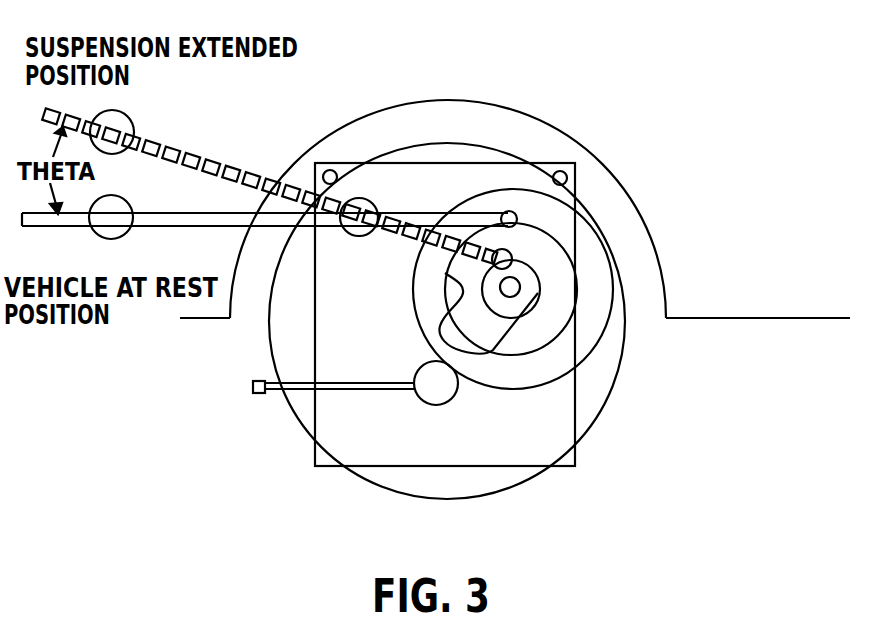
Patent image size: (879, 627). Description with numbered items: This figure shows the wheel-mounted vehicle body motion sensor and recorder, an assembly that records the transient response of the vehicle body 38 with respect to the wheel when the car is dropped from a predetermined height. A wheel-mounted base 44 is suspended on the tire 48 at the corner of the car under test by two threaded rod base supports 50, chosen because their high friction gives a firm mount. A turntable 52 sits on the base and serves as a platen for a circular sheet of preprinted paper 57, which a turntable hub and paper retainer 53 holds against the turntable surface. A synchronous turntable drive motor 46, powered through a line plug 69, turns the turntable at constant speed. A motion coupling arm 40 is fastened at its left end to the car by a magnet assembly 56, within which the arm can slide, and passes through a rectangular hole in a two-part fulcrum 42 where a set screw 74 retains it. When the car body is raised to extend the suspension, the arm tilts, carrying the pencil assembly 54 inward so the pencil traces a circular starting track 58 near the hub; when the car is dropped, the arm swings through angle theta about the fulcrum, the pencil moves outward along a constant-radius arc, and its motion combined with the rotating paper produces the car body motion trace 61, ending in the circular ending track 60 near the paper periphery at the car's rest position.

The vehicle body 38 is at (612, 50).
The motion coupling arm 40 is at (198, 160).
The fulcrum 42 is at (357, 190).
The wheel-mounted base 44 is at (362, 421).
The turntable drive motor 46 is at (439, 407).
The tire 48 is at (398, 494).
The threaded rod base supports 50 is at (323, 170).
The turntable 52 is at (563, 369).
The turntable hub and paper retainer 53 is at (558, 347).
The pencil assembly 54 is at (517, 221).
The magnet assembly 56 is at (117, 239).
The preprinted paper 57 is at (514, 383).
The circular starting track 58 is at (560, 268).
The ending track 60 is at (596, 290).
The car body motion trace 61 is at (518, 338).
The line plug 69 is at (250, 388).
The set screw 74 is at (360, 238).